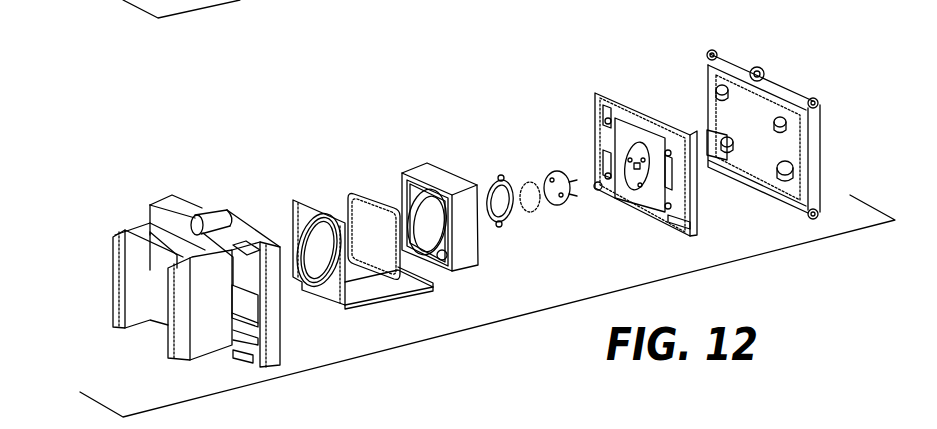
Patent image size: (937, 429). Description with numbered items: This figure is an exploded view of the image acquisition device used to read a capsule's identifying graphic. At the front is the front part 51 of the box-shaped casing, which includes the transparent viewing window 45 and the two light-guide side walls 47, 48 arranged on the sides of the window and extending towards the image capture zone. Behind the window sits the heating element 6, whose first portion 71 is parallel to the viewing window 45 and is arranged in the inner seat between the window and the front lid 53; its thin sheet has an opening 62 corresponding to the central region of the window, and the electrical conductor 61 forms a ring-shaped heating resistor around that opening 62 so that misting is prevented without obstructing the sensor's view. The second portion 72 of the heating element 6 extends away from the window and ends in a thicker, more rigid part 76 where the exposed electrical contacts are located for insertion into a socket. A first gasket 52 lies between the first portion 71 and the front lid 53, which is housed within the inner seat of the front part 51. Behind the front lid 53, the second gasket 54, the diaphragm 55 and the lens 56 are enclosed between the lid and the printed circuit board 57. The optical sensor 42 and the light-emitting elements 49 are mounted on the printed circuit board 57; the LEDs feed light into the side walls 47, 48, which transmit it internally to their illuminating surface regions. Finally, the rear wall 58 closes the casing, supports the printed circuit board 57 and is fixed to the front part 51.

The heating element 6 is at (360, 239).
The optical sensor 42 is at (630, 140).
The viewing window 45 is at (155, 273).
The side wall 47 is at (135, 270).
The side wall 48 is at (200, 293).
The light-emitting element 49 is at (605, 176).
The front part 51 is at (190, 207).
The first gasket 52 is at (382, 205).
The front lid 53 is at (436, 172).
The second gasket 54 is at (497, 182).
The diaphragm 55 is at (536, 202).
The lens 56 is at (568, 200).
The printed circuit board 57 is at (638, 136).
The rear wall 58 is at (792, 95).
The electrical conductor 61 is at (292, 258).
The opening 62 is at (322, 250).
The first portion 71 is at (343, 226).
The second portion 72 is at (375, 293).
The thicker part 76 is at (418, 296).